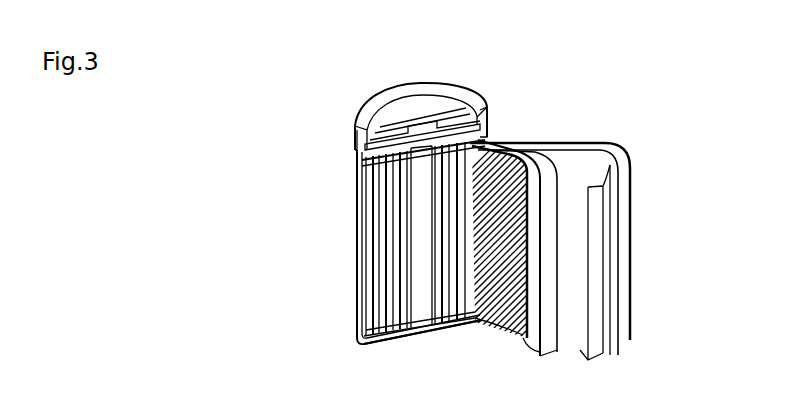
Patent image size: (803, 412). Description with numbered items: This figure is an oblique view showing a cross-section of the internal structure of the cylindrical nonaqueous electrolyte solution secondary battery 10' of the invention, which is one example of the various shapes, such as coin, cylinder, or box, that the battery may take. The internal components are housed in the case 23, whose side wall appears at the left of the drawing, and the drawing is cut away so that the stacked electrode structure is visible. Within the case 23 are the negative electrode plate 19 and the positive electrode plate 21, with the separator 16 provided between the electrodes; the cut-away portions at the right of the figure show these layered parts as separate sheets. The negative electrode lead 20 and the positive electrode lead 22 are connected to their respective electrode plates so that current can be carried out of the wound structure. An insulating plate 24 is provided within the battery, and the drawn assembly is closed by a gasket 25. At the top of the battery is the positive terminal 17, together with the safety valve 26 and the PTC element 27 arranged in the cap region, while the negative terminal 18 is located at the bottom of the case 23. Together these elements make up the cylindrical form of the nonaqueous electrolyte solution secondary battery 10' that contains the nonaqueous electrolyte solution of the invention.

The cylindrical nonaqueous electrolyte solution secondary battery 10' is at (460, 99).
The separator 16 is at (557, 163).
The positive terminal 17 is at (398, 100).
The negative terminal 18 is at (392, 346).
The negative electrode plate 19 is at (605, 219).
The negative electrode lead 20 is at (597, 293).
The positive electrode plate 21 is at (534, 350).
The positive electrode lead 22 is at (488, 137).
The case 23 is at (357, 240).
The insulating plate 24 is at (375, 167).
The gasket 25 is at (360, 110).
The safety valve 26 is at (418, 128).
The PTC element 27 is at (437, 92).